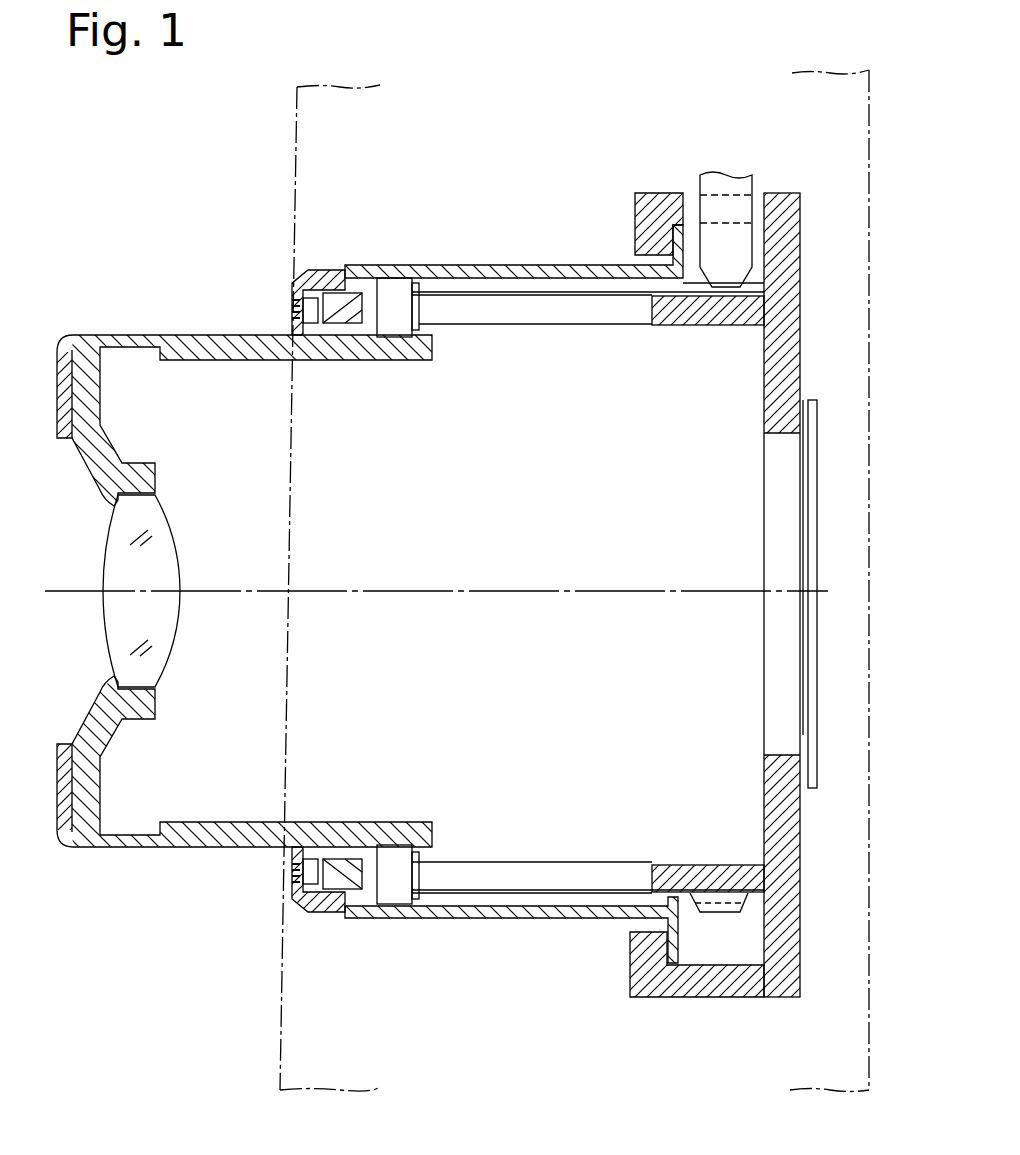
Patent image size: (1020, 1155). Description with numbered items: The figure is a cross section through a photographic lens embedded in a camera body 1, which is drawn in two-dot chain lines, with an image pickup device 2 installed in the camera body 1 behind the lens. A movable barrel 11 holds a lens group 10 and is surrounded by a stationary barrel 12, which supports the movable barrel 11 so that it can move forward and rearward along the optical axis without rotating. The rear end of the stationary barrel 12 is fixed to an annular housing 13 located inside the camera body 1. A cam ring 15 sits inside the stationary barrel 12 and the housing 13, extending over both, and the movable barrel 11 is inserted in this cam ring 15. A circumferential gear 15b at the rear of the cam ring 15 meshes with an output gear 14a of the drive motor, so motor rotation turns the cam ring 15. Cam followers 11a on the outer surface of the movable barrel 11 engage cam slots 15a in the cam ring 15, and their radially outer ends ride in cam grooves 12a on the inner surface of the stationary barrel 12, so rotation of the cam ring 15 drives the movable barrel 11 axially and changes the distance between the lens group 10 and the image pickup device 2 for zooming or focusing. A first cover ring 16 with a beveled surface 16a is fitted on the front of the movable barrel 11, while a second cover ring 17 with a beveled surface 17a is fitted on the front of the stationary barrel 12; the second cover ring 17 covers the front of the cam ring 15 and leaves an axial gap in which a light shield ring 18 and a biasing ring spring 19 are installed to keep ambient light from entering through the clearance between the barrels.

The camera body 1 is at (320, 100).
The image pickup device 2 is at (814, 535).
The lens group 10 is at (175, 625).
The movable barrel 11 is at (205, 848).
The cam followers 11a is at (405, 300).
The stationary barrel 12 is at (480, 266).
The cam grooves 12a is at (558, 276).
The housing 13 is at (736, 992).
The output gear 14a is at (720, 268).
The cam ring 15 is at (517, 893).
The cam slots 15a is at (656, 325).
The circumferential gear 15b is at (700, 917).
The first cover ring 16 is at (142, 342).
The beveled surface 16a is at (68, 340).
The second cover ring 17 is at (322, 272).
The beveled surface 17a is at (297, 283).
The light shield ring 18 is at (310, 313).
The ring spring 19 is at (340, 310).